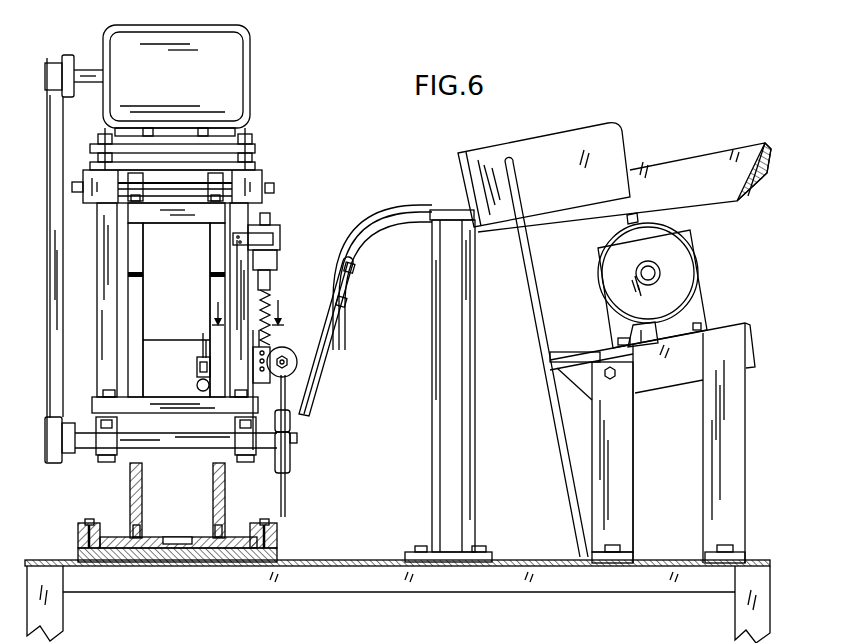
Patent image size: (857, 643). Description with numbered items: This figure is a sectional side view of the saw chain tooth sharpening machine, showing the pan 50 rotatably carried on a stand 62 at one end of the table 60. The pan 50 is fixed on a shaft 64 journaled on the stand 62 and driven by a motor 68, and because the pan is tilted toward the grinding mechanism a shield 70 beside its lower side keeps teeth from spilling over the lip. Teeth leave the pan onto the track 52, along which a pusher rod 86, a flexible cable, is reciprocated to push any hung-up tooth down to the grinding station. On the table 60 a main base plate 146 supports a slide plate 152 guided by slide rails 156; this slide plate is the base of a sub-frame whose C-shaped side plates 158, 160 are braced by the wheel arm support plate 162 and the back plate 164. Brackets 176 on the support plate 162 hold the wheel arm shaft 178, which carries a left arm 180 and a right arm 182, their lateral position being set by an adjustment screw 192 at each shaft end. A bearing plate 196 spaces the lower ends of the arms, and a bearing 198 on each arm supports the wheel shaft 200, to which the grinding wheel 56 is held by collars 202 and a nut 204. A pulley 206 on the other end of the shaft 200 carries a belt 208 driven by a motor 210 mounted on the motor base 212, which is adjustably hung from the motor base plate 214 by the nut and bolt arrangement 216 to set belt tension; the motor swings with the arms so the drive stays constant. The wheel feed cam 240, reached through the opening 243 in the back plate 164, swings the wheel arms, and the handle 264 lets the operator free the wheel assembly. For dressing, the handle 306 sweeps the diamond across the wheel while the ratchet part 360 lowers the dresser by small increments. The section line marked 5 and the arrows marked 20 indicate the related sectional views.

The section line 5- 5 is at (174, 8).
The direction of movement arrow 20 is at (249, 313).
The pan 50 is at (687, 167).
The track 52 is at (358, 241).
The grinding wheel 56 is at (286, 494).
The table 60 is at (232, 567).
The stand 62 is at (602, 447).
The shaft 64 is at (638, 220).
The motor 68 is at (685, 276).
The shield 70 is at (620, 157).
The pusher rod 86 is at (340, 272).
The main base plate 146 is at (273, 557).
The slide plate 152 is at (146, 546).
The slide rails 156 is at (84, 534).
The side plate 158 is at (139, 334).
The side plate 160 is at (218, 291).
The wheel arm support plate 162 is at (210, 214).
The back plate 164 is at (147, 359).
The brackets 176 is at (142, 216).
The wheel arm shaft 178 is at (236, 190).
The left arm 180 is at (112, 308).
The right arm 182 is at (262, 289).
The adjustment screw 192 is at (72, 187).
The bearing plate 196 is at (195, 413).
The bearing 198 is at (115, 452).
The wheel shaft 200 is at (162, 448).
The collars 202 is at (290, 470).
The nut 204 is at (291, 437).
The pulley 206 is at (52, 458).
The belt 208 is at (52, 318).
The motor 210 is at (244, 74).
The motor base 212 is at (252, 147).
The motor base plate 214 is at (253, 165).
The nut and bolt arrangement 216 is at (104, 143).
The wheel feed cam 240 is at (198, 363).
The opening 243 is at (203, 344).
The handle 264 is at (196, 387).
The handle 306 is at (297, 365).
The manipulative part 360 is at (273, 223).